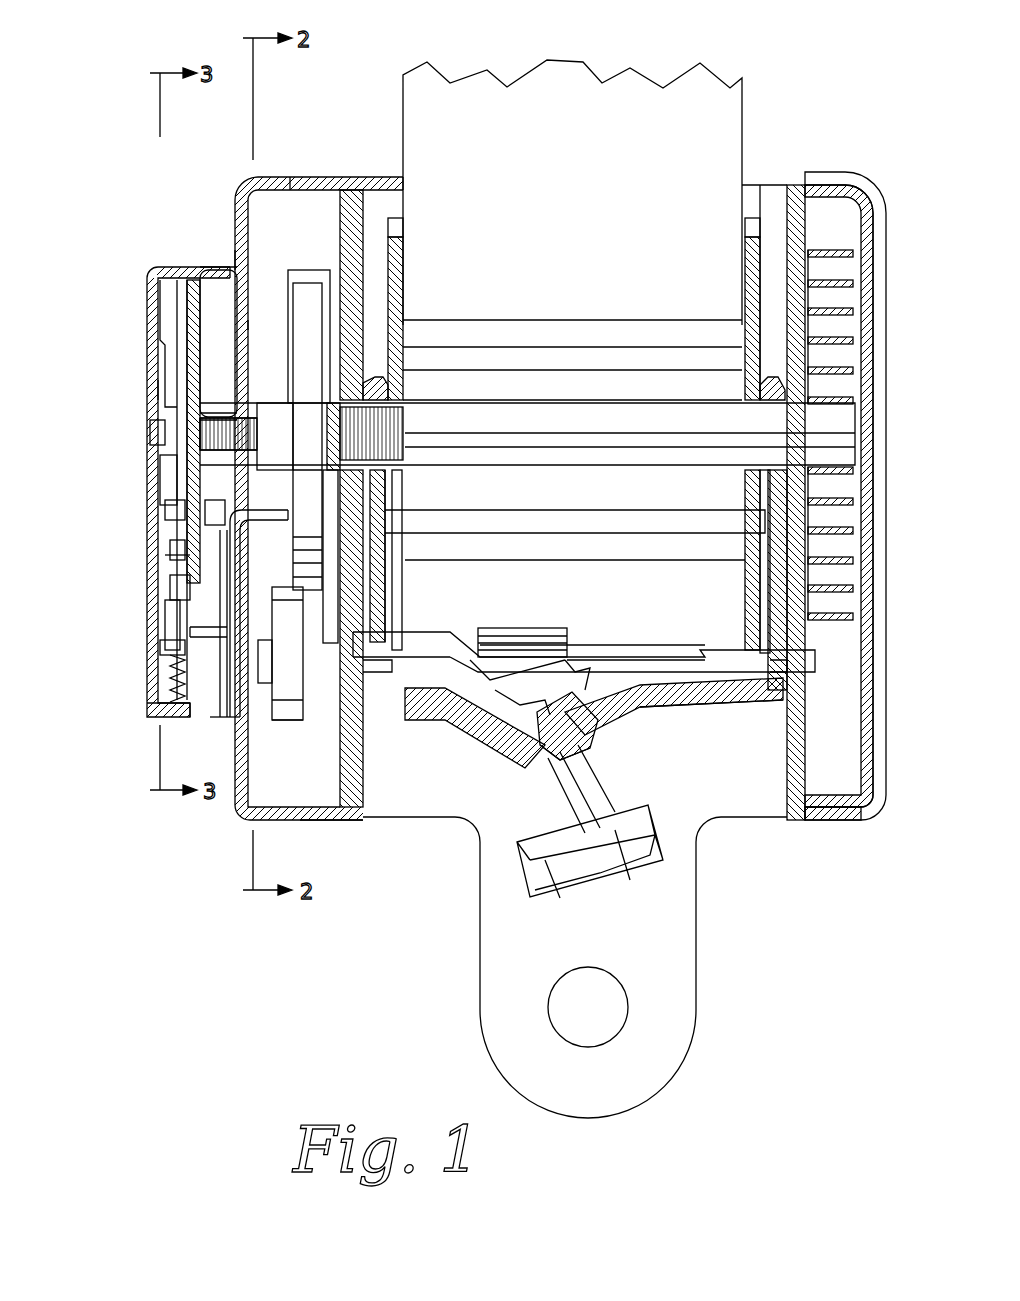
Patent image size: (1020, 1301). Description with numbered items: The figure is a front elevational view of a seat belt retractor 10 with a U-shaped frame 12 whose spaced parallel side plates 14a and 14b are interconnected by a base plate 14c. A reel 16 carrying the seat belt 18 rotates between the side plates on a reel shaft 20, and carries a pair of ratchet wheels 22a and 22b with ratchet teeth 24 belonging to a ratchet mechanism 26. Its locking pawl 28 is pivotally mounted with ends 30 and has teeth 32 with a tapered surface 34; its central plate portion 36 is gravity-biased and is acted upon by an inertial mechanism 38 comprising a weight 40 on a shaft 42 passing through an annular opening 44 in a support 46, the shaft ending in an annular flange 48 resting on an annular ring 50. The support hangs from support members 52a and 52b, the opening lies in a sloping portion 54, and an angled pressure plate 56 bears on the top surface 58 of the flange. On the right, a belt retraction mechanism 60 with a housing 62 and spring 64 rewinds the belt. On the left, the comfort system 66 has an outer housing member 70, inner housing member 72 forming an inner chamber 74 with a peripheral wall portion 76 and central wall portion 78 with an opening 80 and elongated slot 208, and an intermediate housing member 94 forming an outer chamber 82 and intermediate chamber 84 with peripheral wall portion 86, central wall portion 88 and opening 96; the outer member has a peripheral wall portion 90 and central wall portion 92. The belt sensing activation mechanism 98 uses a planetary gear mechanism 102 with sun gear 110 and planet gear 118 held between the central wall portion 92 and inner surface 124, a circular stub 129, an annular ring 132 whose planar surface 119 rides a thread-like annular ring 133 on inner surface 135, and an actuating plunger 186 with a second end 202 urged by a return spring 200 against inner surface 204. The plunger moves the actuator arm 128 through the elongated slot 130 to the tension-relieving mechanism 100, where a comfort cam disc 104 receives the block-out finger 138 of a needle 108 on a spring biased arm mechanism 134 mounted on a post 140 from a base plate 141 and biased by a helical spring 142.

The seat belt retractor 10 is at (765, 160).
The U-shaped frame 12 is at (775, 185).
The side plate 14a is at (365, 782).
The side plate 14b is at (790, 790).
The base plate 14c is at (405, 808).
The reel 16 is at (596, 357).
The seat belt 18 is at (553, 72).
The reel shaft 20 is at (520, 420).
The ratchet wheel 22a is at (397, 276).
The ratchet wheel 22b is at (752, 276).
The ratchet teeth 24 is at (400, 228).
The ratchet mechanism 26 is at (597, 608).
The locking pawl 28 is at (628, 618).
The ends 30 is at (372, 672).
The teeth 32 is at (455, 640).
The tapered surface 34 is at (422, 702).
The central plate portion 36 is at (570, 632).
The inertial mechanism 38 is at (506, 795).
The weight 40 is at (656, 832).
The shaft 42 is at (588, 800).
The annular opening 44 is at (578, 735).
The support 46 is at (655, 725).
The annular flange 48 is at (598, 716).
The annular ring 50 is at (505, 705).
The support member 52a is at (385, 567).
The support member 52b is at (748, 562).
The sloping portion 54 is at (650, 700).
The angled pressure plate 56 is at (487, 674).
The top surface 58 is at (572, 682).
The belt retraction mechanism 60 is at (864, 165).
The housing 62 is at (874, 240).
The spring 64 is at (845, 308).
The comfort system 66 is at (172, 262).
The outer cup-shaped housing member 70 is at (130, 272).
The inner cup-shaped housing member 72 is at (272, 165).
The inner chamber 74 is at (303, 190).
The peripheral wall portion 76 is at (345, 188).
The central wall portion 78 is at (243, 258).
The opening 80 is at (270, 405).
The outer chamber 82 is at (172, 332).
The intermediate chamber 84 is at (238, 322).
The peripheral wall portion 86 is at (180, 252).
The central wall portion 88 is at (225, 330).
The peripheral wall portion 90 is at (180, 250).
The central wall portion 92 is at (156, 388).
The intermediate cup-shaped housing member 94 is at (226, 255).
The opening 96 is at (205, 418).
The belt sensing activation mechanism 98 is at (165, 367).
The tension-relieving mechanism 100 is at (227, 662).
The planetary gear mechanism 102 is at (155, 480).
The comfort cam disc 104 is at (306, 283).
The needle 108 is at (258, 578).
The sun gear 110 is at (160, 465).
The planet gear 118 is at (170, 580).
The planar surface 119 is at (175, 556).
The inner surface 124 is at (176, 310).
The actuator arm 128 is at (170, 545).
The circular stub 129 is at (150, 425).
The elongated slot 130 is at (222, 632).
The annular ring 132 is at (222, 525).
The thread-like annular ring 133 is at (165, 518).
The spring biased arm mechanism 134 is at (290, 722).
The inner surface 135 is at (172, 615).
The block-out finger 138 is at (375, 495).
The post 140 is at (320, 700).
The base plate 141 is at (343, 795).
The helical spring 142 is at (270, 700).
The actuating plunger 186 is at (172, 636).
The return spring 200 is at (160, 712).
The second end 202 is at (172, 675).
The inner surface 204 is at (180, 722).
The elongated slot 208 is at (230, 470).